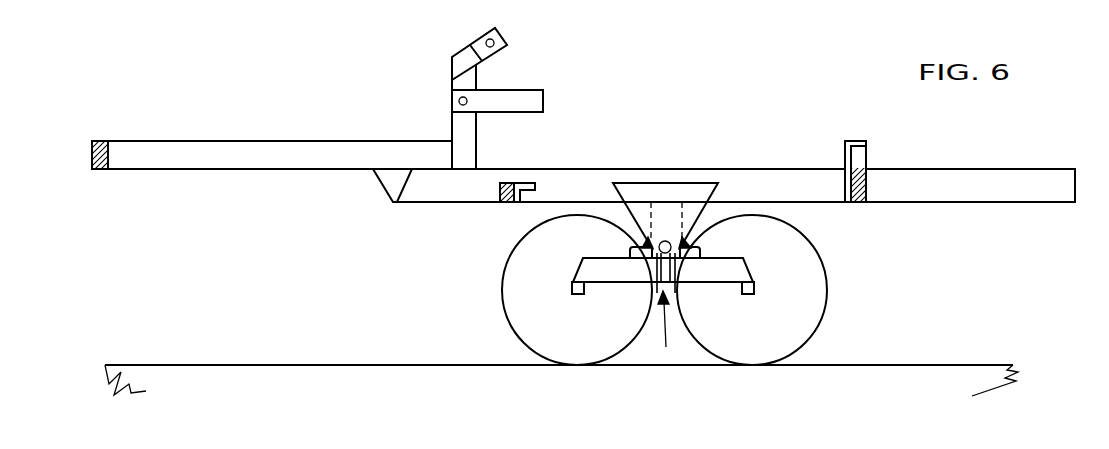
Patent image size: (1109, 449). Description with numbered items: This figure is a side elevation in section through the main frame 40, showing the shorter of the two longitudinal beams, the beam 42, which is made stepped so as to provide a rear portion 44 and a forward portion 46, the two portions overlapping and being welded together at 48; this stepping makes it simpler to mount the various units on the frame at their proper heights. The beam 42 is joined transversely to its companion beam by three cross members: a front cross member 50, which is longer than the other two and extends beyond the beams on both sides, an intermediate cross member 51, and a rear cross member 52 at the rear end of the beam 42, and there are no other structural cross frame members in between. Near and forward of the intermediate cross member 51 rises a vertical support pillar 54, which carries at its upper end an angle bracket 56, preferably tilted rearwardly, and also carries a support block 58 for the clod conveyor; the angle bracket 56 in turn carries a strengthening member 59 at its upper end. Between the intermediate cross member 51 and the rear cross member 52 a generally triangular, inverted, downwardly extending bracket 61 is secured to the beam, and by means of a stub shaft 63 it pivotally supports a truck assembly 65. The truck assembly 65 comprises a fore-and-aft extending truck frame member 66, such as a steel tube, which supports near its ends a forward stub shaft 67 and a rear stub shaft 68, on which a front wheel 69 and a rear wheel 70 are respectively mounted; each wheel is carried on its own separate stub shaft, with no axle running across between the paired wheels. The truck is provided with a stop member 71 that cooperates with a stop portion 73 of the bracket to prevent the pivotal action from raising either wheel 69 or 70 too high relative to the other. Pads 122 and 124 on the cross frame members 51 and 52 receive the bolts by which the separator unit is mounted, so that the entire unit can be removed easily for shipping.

The main frame 40 is at (737, 162).
The beam 42 is at (763, 181).
The rear portion 44 is at (1001, 192).
The forward portion 46 is at (197, 152).
The weld 48 is at (396, 206).
The front cross member 50 is at (92, 153).
The intermediate cross member 51 is at (509, 205).
The rear cross member 52 is at (857, 203).
The vertical support pillar 54 is at (469, 148).
The angle bracket 56 is at (468, 55).
The support block 58 is at (518, 100).
The strengthening member 59 is at (502, 38).
The bracket 61 is at (649, 183).
The stub shaft 63 is at (684, 243).
The truck assembly 65 is at (652, 327).
The truck frame member 66 is at (702, 278).
The forward stub shaft 67 is at (572, 295).
The rear stub shaft 68 is at (747, 297).
The front wheel 69 is at (517, 303).
The rear wheel 70 is at (812, 316).
The stop member 71 is at (650, 255).
The stop portion 73 is at (640, 246).
The pad 122 is at (522, 183).
The pad 124 is at (869, 141).